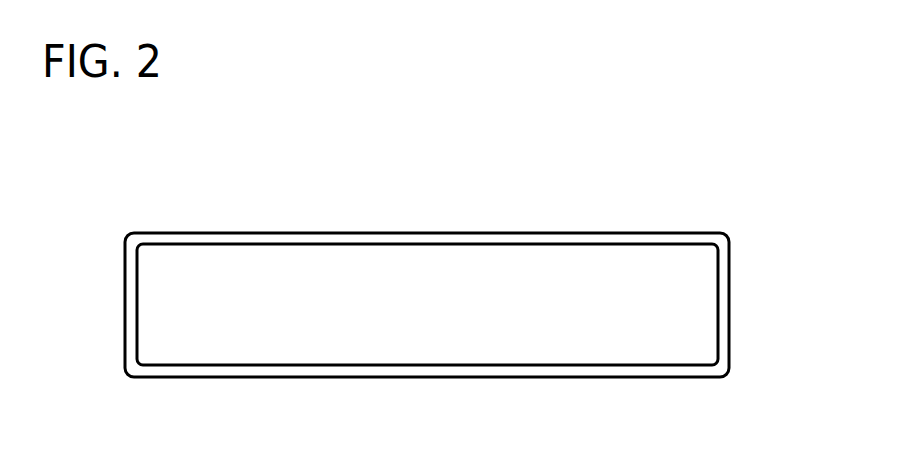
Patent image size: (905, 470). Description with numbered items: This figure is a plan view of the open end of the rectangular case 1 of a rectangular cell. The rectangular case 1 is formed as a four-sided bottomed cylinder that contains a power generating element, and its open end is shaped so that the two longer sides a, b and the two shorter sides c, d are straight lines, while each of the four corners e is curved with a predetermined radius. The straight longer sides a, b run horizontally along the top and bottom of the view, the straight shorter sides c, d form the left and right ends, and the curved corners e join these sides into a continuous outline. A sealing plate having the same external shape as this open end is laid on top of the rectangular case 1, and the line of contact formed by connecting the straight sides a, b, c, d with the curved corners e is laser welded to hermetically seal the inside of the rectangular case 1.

The rectangular case 1 is at (272, 210).
The longer side a is at (417, 233).
The longer side b is at (390, 377).
The shorter side c is at (123, 295).
The shorter side d is at (729, 305).
The corner e is at (128, 233).